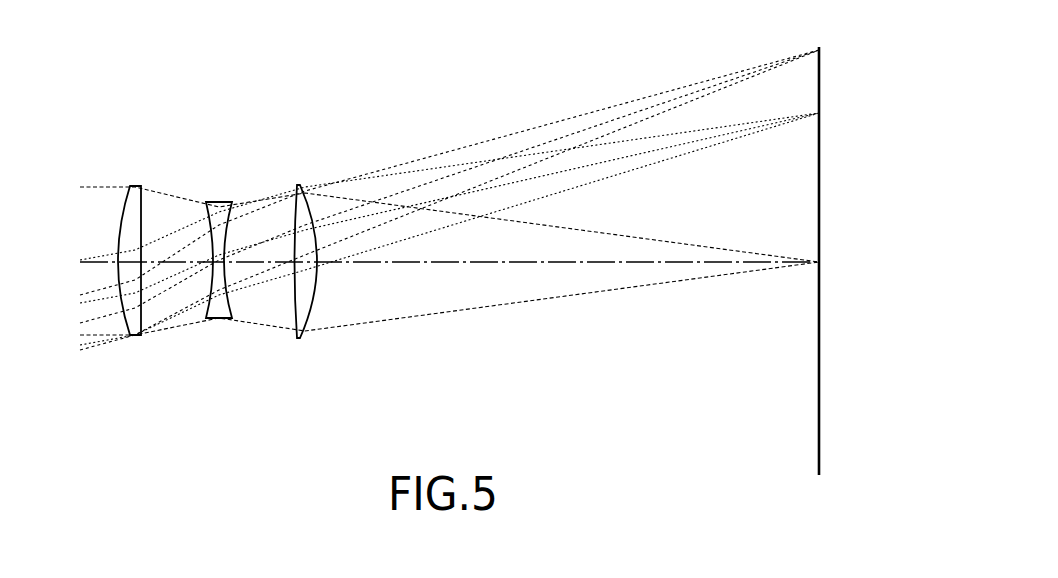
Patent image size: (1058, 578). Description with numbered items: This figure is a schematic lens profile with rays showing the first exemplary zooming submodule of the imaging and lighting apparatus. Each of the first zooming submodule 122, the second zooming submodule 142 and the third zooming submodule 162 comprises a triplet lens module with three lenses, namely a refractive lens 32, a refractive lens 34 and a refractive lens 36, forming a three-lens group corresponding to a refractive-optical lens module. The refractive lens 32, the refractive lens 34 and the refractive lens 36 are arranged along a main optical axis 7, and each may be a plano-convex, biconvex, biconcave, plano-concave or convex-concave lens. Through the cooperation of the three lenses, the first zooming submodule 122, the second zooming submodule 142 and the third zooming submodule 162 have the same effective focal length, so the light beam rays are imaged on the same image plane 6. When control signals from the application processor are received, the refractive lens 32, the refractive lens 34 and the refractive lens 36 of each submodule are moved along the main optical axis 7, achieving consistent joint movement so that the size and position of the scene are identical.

The first zooming submodule 122 is at (208, 228).
The second zooming submodule 142 is at (208, 228).
The third zooming submodule 162 is at (252, 108).
The refractive lens 32 is at (128, 240).
The refractive lens 34 is at (220, 203).
The refractive lens 36 is at (305, 312).
The main optical axis 7 is at (566, 262).
The image plane 6 is at (818, 415).